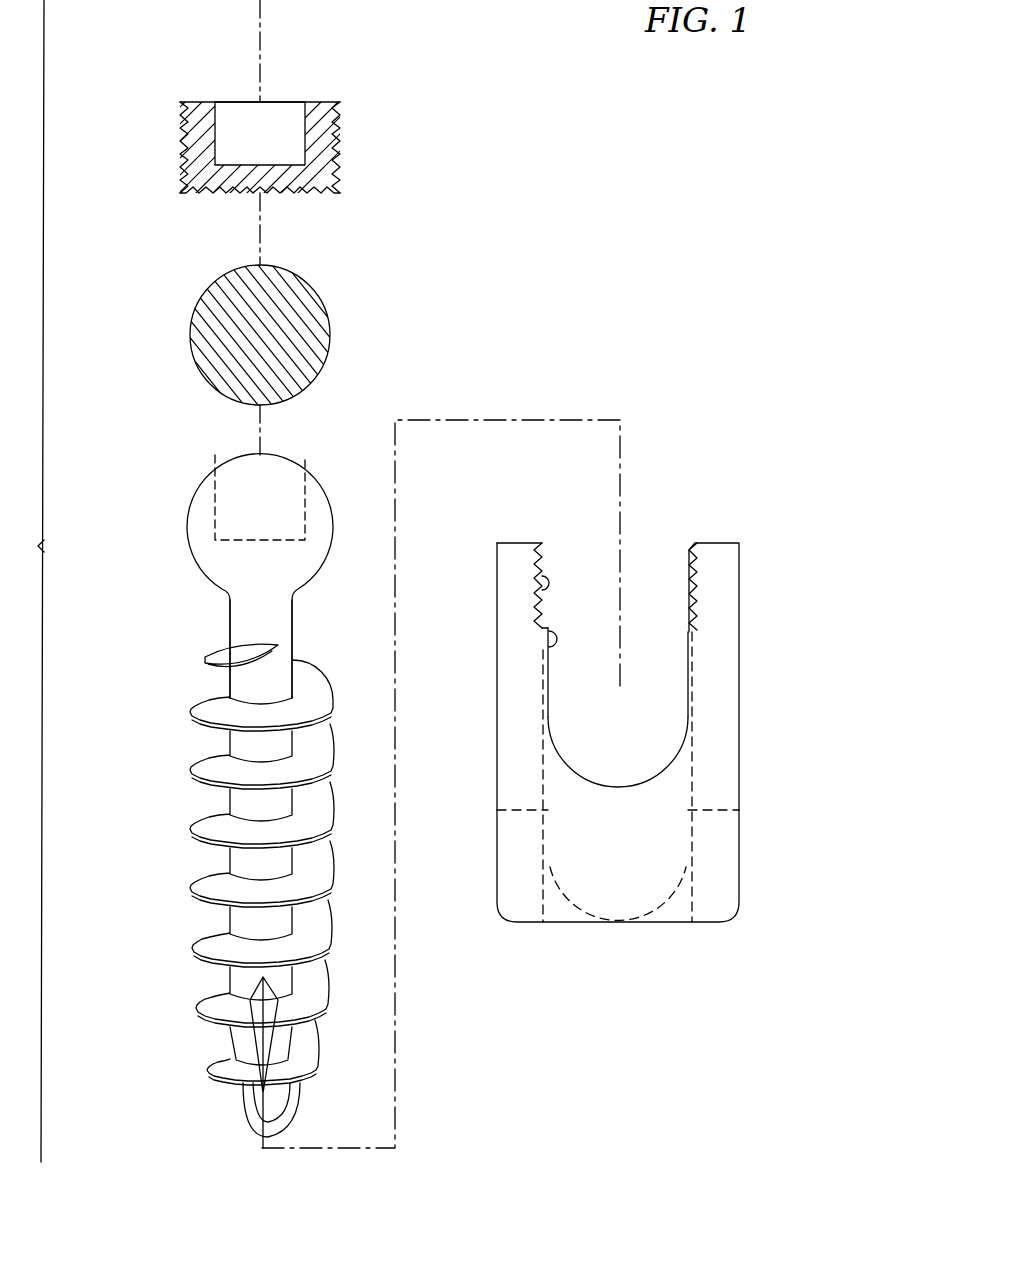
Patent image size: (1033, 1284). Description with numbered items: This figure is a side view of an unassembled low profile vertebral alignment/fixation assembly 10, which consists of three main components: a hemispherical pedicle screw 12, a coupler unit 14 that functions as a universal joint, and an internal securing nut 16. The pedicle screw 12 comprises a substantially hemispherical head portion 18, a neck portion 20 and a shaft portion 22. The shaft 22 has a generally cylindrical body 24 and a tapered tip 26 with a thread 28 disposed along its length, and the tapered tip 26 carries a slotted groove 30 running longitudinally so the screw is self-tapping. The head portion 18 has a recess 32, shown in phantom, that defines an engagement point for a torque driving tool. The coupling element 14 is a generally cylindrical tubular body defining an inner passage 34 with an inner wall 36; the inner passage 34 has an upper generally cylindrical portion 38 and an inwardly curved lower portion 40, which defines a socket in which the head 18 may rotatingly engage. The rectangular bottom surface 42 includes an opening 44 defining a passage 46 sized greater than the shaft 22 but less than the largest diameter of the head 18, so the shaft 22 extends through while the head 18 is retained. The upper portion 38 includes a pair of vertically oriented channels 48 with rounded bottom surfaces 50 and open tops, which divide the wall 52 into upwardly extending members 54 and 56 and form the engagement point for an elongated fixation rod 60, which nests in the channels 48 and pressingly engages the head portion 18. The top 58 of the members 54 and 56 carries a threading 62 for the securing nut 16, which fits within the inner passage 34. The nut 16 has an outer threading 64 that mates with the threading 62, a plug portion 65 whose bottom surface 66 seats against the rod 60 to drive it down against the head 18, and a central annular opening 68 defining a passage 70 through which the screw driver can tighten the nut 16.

The vertebral alignment/fixation assembly 10 is at (695, 173).
The hemispherical pedicle screw 12 is at (166, 791).
The coupler unit 14 is at (760, 719).
The internal securing nut 16 is at (470, 179).
The hemispherical head portion 18 is at (188, 525).
The neck portion 20 is at (232, 628).
The shaft portion 22 is at (178, 823).
The cylindrical body 24 is at (228, 930).
The tapered tip 26 is at (243, 1093).
The thread 28 is at (216, 886).
The slotted groove 30 is at (255, 1015).
The recess 32 is at (243, 478).
The inner passage 34 is at (650, 682).
The inner wall 36 is at (546, 631).
The upper generally cylindrical portion 38 is at (683, 599).
The inwardly curved lower portion 40 is at (668, 856).
The bottom surface 42 is at (590, 905).
The opening 44 is at (620, 917).
The passage 46 is at (680, 892).
The channels 48 is at (547, 657).
The rounded bottom surfaces 50 is at (600, 787).
The wall 52 is at (742, 783).
The upwardly extending member 54 is at (517, 580).
The upwardly extending member 56 is at (722, 560).
The top 58 is at (530, 543).
The elongated fixation rod 60 is at (318, 303).
The threading 62 is at (542, 577).
The outer threading 64 is at (182, 152).
The plug portion 65 is at (285, 180).
The bottom surface 66 is at (197, 196).
The central annular opening 68 is at (224, 101).
The passage 70 is at (272, 128).